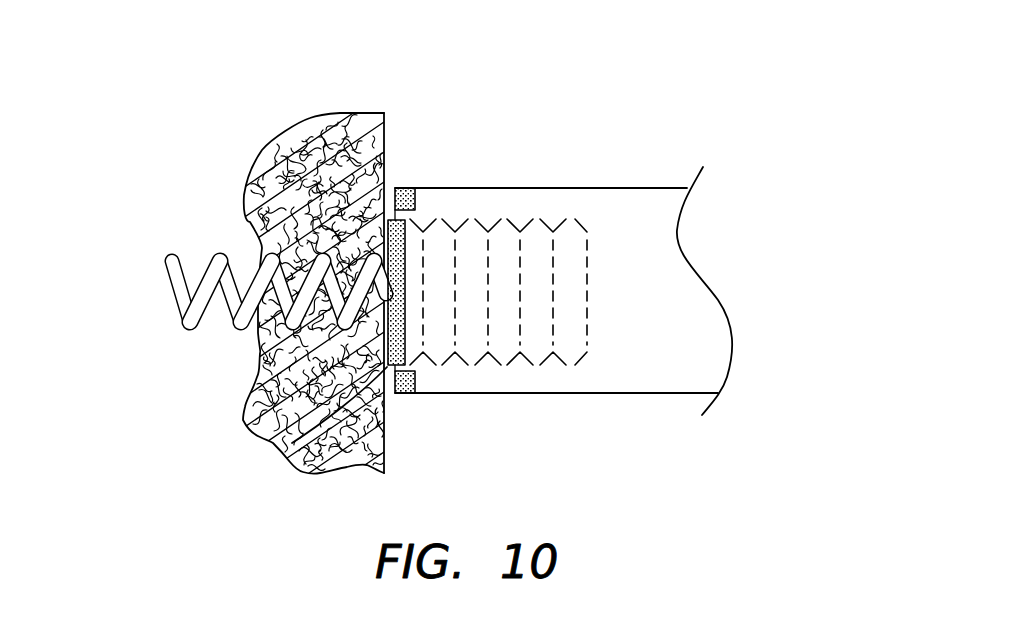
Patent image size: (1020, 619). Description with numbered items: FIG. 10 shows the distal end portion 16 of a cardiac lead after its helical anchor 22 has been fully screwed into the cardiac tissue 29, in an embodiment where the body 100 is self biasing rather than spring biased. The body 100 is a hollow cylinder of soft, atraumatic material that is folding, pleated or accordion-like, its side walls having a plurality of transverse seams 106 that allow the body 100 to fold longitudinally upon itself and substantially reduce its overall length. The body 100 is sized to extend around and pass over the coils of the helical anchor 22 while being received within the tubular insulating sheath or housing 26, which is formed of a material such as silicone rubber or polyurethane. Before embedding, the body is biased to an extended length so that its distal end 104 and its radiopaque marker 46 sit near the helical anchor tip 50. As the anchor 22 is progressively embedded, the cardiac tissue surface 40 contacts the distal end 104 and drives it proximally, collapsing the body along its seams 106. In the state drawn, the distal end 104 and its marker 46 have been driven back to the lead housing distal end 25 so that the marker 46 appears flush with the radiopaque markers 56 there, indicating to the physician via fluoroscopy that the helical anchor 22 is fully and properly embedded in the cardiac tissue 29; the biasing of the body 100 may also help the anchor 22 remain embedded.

The distal end portion 16 is at (558, 126).
The helical anchor 22 is at (218, 256).
The lead housing distal end 25 is at (292, 443).
The tubular insulating sheath or housing 26 is at (640, 188).
The cardiac tissue 29 is at (286, 132).
The cardiac tissue surface 40 is at (385, 122).
The radiopaque marker 46 is at (412, 232).
The helical anchor tip 50 is at (176, 262).
The radiopaque markers 56 is at (404, 188).
The body 100 is at (492, 358).
The distal end 104 is at (390, 330).
The transverse seams 106 is at (490, 230).